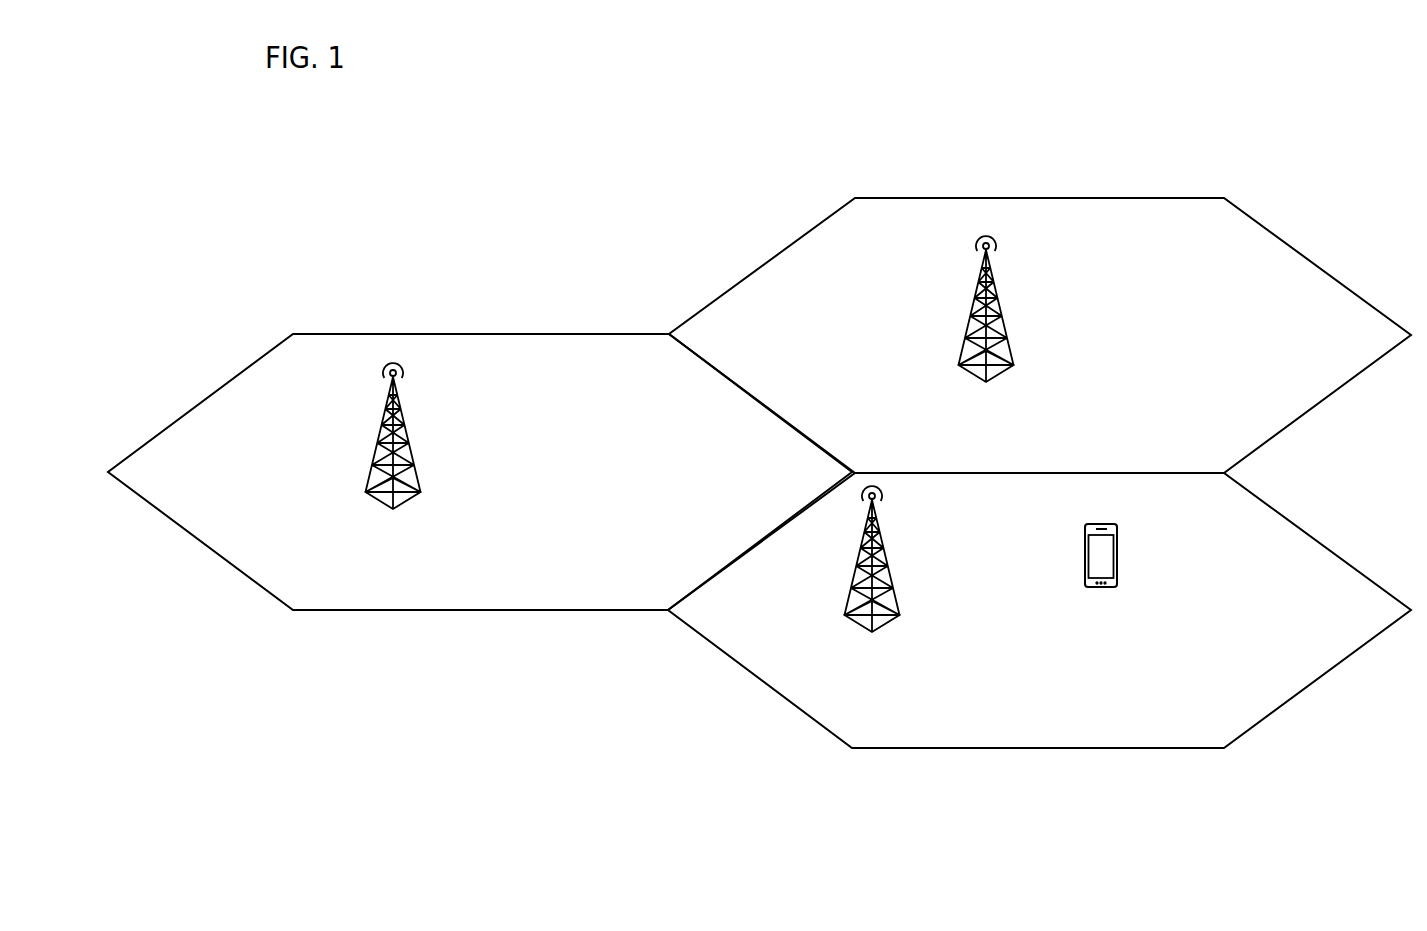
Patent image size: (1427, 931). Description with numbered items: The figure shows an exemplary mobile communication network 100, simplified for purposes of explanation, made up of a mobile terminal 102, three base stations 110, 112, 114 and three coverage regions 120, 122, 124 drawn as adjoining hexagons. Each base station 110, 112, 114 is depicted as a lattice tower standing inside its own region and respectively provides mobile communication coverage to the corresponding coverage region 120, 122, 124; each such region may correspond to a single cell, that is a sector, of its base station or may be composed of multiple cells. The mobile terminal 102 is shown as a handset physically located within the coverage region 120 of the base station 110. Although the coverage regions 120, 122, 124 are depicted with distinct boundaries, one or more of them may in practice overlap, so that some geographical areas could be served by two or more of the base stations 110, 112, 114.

The mobile communication network 100 is at (759, 468).
The mobile terminal 102 is at (1100, 546).
The base station 110 is at (872, 571).
The base station 112 is at (986, 320).
The base station 114 is at (393, 451).
The coverage region 120 is at (1223, 748).
The coverage region 122 is at (1126, 197).
The coverage region 124 is at (598, 333).